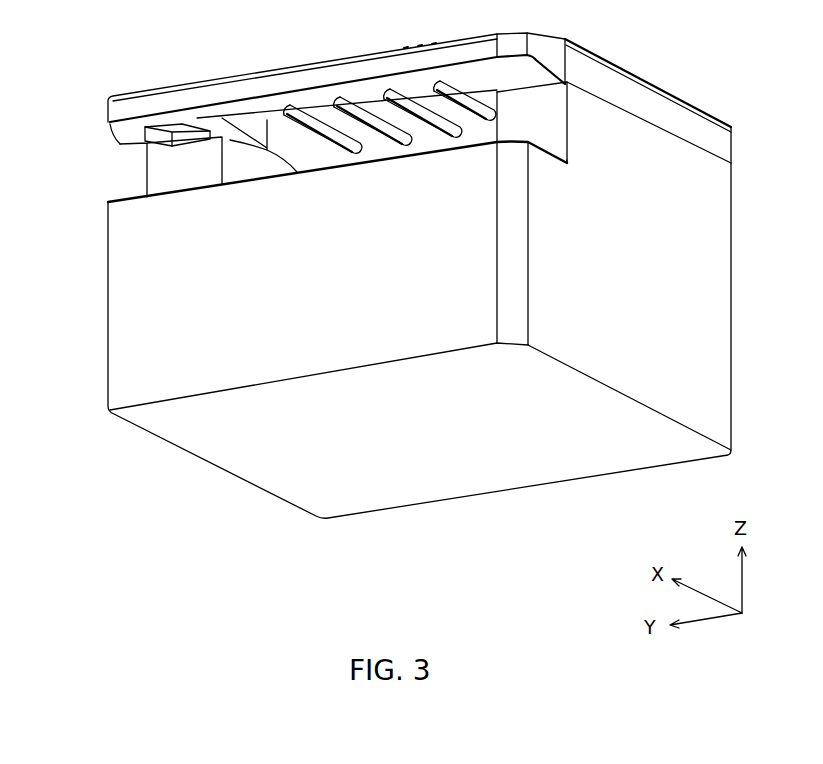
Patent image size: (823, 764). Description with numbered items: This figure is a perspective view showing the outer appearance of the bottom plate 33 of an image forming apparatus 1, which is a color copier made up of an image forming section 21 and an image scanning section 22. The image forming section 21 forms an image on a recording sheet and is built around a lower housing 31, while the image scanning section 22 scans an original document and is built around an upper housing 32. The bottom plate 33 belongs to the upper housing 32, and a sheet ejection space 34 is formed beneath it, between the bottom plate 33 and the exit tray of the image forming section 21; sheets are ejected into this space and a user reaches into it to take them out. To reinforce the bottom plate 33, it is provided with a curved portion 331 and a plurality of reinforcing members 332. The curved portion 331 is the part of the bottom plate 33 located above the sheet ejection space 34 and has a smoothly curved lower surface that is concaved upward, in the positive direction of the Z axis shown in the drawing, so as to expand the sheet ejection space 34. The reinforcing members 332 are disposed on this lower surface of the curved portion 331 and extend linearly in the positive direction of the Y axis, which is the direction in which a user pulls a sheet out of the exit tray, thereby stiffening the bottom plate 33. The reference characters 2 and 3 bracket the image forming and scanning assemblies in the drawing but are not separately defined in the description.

The image forming apparatus 1 is at (692, 82).
The housing 2 is at (52, 120).
The image forming section 21 is at (103, 270).
The image scanning section 22 is at (102, 115).
The cover 3 is at (756, 135).
The lower housing 31 is at (706, 221).
The upper housing 32 is at (717, 144).
The bottom plate 33 is at (189, 118).
The curved portion 331 is at (268, 130).
The reinforcing members 332 is at (443, 130).
The sheet ejection space 34 is at (345, 153).